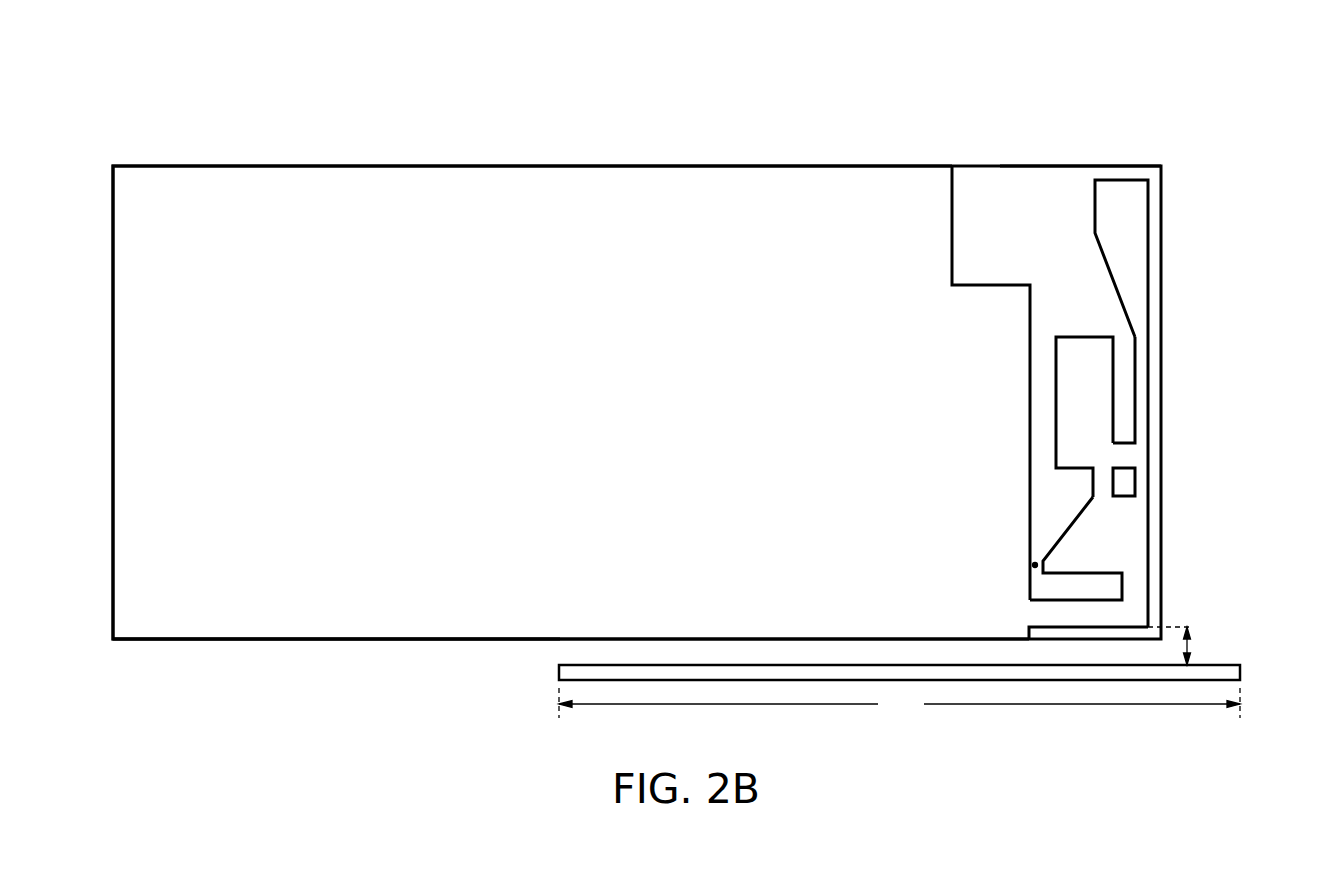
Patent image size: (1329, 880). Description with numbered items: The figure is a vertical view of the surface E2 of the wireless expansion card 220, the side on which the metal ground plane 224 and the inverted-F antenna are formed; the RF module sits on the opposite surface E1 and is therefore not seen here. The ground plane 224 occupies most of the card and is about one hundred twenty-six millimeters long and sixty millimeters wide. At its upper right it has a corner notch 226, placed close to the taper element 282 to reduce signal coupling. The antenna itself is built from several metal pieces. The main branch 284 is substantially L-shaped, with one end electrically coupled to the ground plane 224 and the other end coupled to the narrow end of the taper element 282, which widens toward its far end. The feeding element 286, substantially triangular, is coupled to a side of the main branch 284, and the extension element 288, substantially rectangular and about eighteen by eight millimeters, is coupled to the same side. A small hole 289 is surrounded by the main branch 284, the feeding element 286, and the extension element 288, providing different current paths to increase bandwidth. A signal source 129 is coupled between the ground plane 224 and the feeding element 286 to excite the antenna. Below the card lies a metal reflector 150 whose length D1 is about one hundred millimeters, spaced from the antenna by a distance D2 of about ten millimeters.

The wireless expansion card 220 is at (150, 88).
The ground plane 224 is at (556, 220).
The corner notch 226 is at (1017, 220).
The surface E1 is at (1069, 166).
The surface E2 is at (295, 640).
The taper element 282 is at (1128, 213).
The main branch 284 is at (1141, 415).
The feeding element 286 is at (1100, 542).
The extension element 288 is at (1093, 363).
The small hole 289 is at (1127, 482).
The signal source 129 is at (1036, 563).
The metal reflector 150 is at (570, 671).
The length of the metal reflector D1 is at (899, 703).
The distance between the metal reflector and the inverted-F antenna D2 is at (1187, 646).